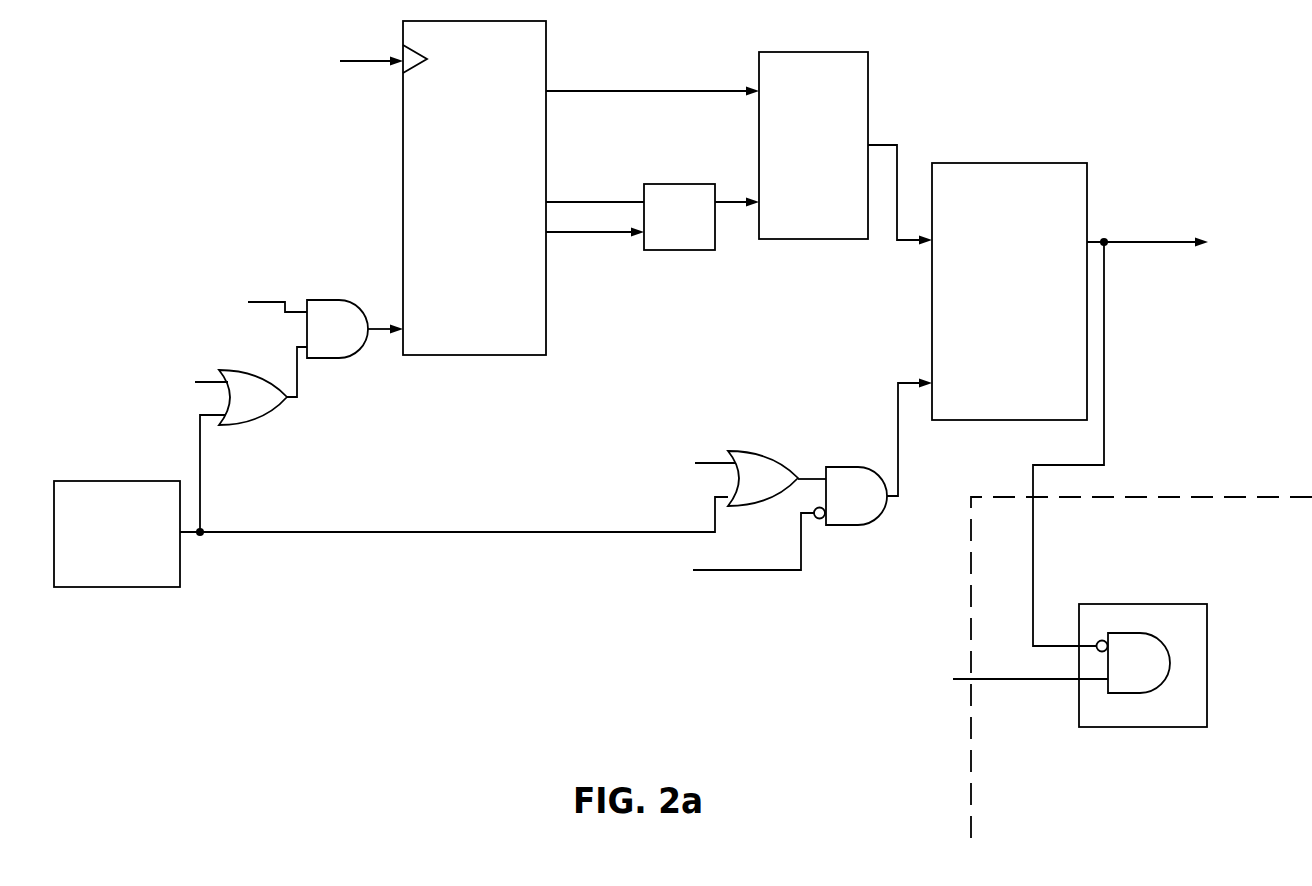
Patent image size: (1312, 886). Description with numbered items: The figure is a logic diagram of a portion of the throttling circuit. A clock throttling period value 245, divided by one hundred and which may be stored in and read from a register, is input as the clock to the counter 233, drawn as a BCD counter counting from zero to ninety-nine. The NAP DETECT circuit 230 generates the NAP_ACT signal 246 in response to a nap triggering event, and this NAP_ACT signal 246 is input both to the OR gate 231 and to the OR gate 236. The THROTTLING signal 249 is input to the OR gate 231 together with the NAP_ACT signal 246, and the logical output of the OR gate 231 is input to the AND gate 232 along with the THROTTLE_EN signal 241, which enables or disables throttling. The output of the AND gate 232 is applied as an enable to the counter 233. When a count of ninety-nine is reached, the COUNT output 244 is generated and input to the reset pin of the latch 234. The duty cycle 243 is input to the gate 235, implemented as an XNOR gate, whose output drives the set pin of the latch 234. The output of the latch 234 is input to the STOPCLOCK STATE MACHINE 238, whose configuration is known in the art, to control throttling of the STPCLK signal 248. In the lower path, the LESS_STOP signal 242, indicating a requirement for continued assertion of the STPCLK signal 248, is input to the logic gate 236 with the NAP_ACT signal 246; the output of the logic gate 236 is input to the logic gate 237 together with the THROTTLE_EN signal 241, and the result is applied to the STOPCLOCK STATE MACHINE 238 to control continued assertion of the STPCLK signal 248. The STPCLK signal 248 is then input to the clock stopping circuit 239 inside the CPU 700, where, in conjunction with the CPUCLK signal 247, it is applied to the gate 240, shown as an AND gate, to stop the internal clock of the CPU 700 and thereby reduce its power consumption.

The NAP DETECT circuit 230 is at (137, 587).
The OR gate 231 is at (280, 412).
The AND gate 232 is at (327, 298).
The counter 233 is at (402, 154).
The latch 234 is at (868, 70).
The gate 235 is at (652, 178).
The OR gate 236 is at (760, 448).
The logic gate 237 is at (838, 466).
The STOPCLOCK STATE MACHINE 238 is at (1020, 162).
The clock stopping circuit 239 is at (1147, 602).
The gate 240 is at (1137, 694).
The THROTTLE_EN signal 241 is at (273, 297).
The LESS_STOP signal 242 is at (712, 456).
The duty cycle 243 is at (578, 234).
The COUNT output 244 is at (568, 88).
The CLK THROTTLING PERIOD/100 245 is at (362, 63).
The NAP_ACT signal 246 is at (323, 535).
The CPUCLK signal 247 is at (1005, 683).
The STPCLK signal 248 is at (1143, 238).
The THROTTLING signal 249 is at (208, 378).
The CPU 700 is at (971, 577).